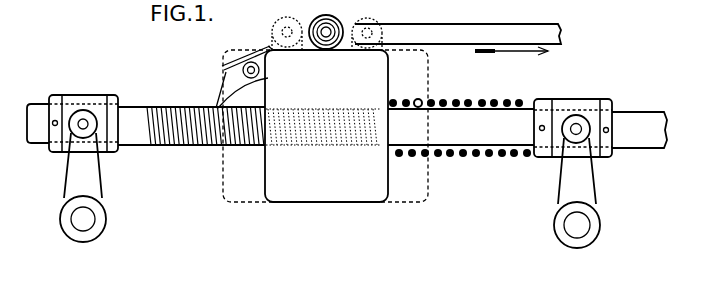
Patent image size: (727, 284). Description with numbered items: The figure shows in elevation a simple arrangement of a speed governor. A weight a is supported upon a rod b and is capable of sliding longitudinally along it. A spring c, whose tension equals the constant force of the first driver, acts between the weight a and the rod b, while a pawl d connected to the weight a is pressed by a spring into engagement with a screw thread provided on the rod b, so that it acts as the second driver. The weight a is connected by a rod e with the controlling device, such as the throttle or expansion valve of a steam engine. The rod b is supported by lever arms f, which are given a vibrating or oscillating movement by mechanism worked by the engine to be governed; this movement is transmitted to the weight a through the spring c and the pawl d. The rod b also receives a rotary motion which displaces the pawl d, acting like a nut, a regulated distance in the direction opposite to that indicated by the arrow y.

The weight a is at (326, 126).
The rod b is at (461, 127).
The spring c is at (460, 137).
The pawl d is at (236, 77).
The rod e is at (458, 34).
The lever arms f is at (330, 190).
The arrow y is at (511, 58).